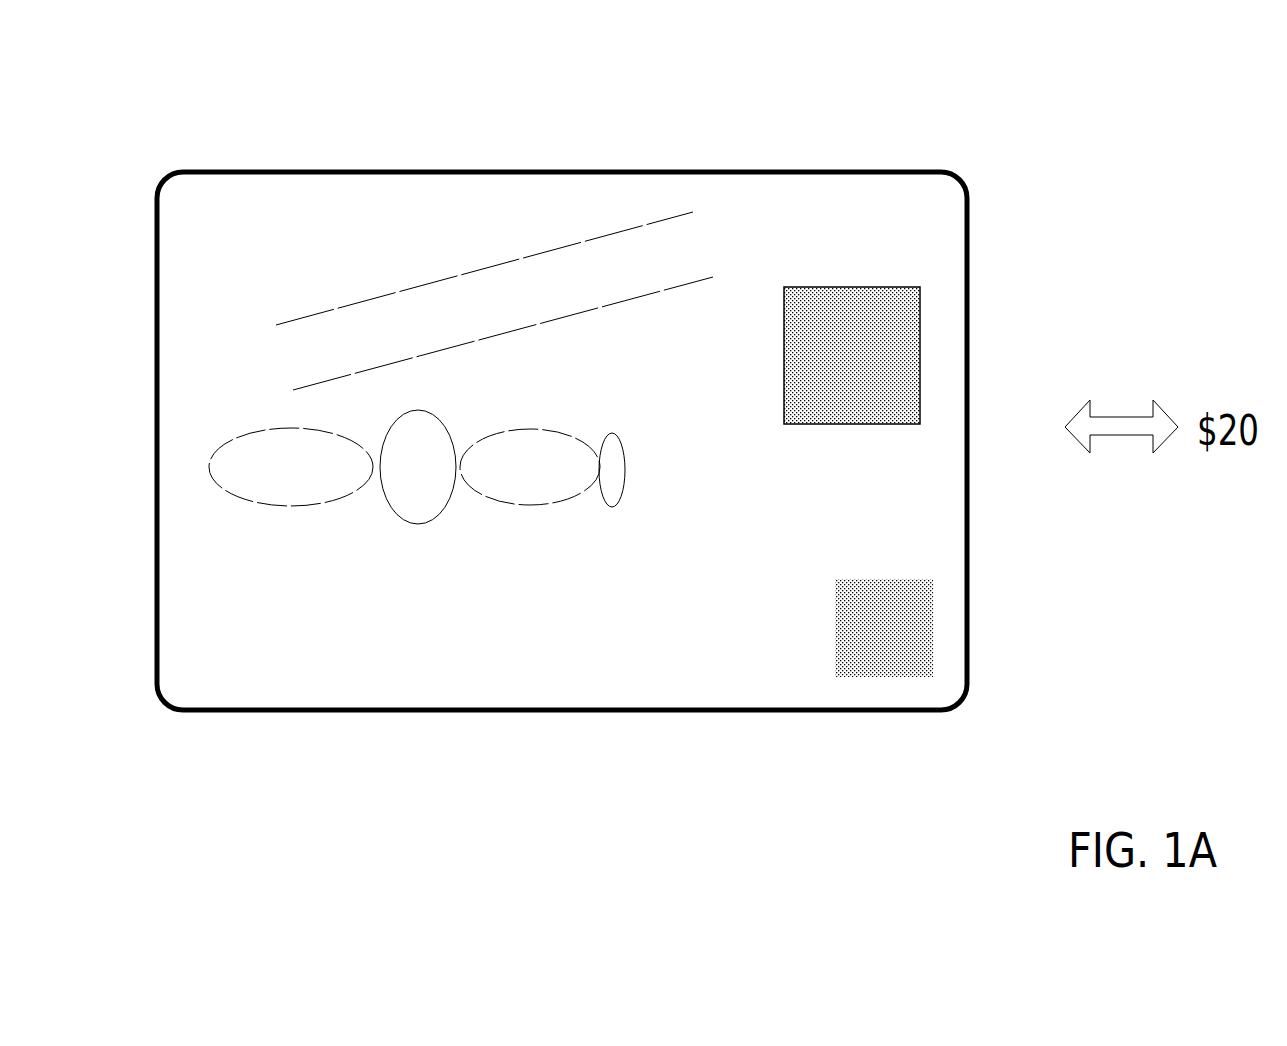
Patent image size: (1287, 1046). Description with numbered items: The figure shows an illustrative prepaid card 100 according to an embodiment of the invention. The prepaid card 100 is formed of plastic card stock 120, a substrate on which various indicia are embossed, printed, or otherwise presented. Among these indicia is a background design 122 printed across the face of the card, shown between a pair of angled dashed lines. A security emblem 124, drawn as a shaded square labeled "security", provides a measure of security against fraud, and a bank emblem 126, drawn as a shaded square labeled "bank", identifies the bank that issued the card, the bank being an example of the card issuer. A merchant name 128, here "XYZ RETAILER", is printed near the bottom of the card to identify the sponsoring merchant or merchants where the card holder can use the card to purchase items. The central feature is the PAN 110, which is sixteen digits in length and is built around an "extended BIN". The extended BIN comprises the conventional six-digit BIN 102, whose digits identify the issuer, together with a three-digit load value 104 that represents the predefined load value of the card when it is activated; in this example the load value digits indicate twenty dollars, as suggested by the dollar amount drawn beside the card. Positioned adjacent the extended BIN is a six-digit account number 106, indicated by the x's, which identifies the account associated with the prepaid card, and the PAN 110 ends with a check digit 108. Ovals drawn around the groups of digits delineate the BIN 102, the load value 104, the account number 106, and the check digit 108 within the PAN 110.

The prepaid card 100 is at (998, 93).
The six-digit BIN 102 is at (280, 507).
The three-digit load value 104 is at (397, 518).
The six-digit account number 106 is at (567, 433).
The check digit 108 is at (613, 435).
The PAN 110 is at (213, 427).
The plastic card stock 120 is at (193, 168).
The background design 122 is at (456, 262).
The security emblem 124 is at (935, 393).
The bank emblem 126 is at (940, 631).
The merchant name 128 is at (298, 686).